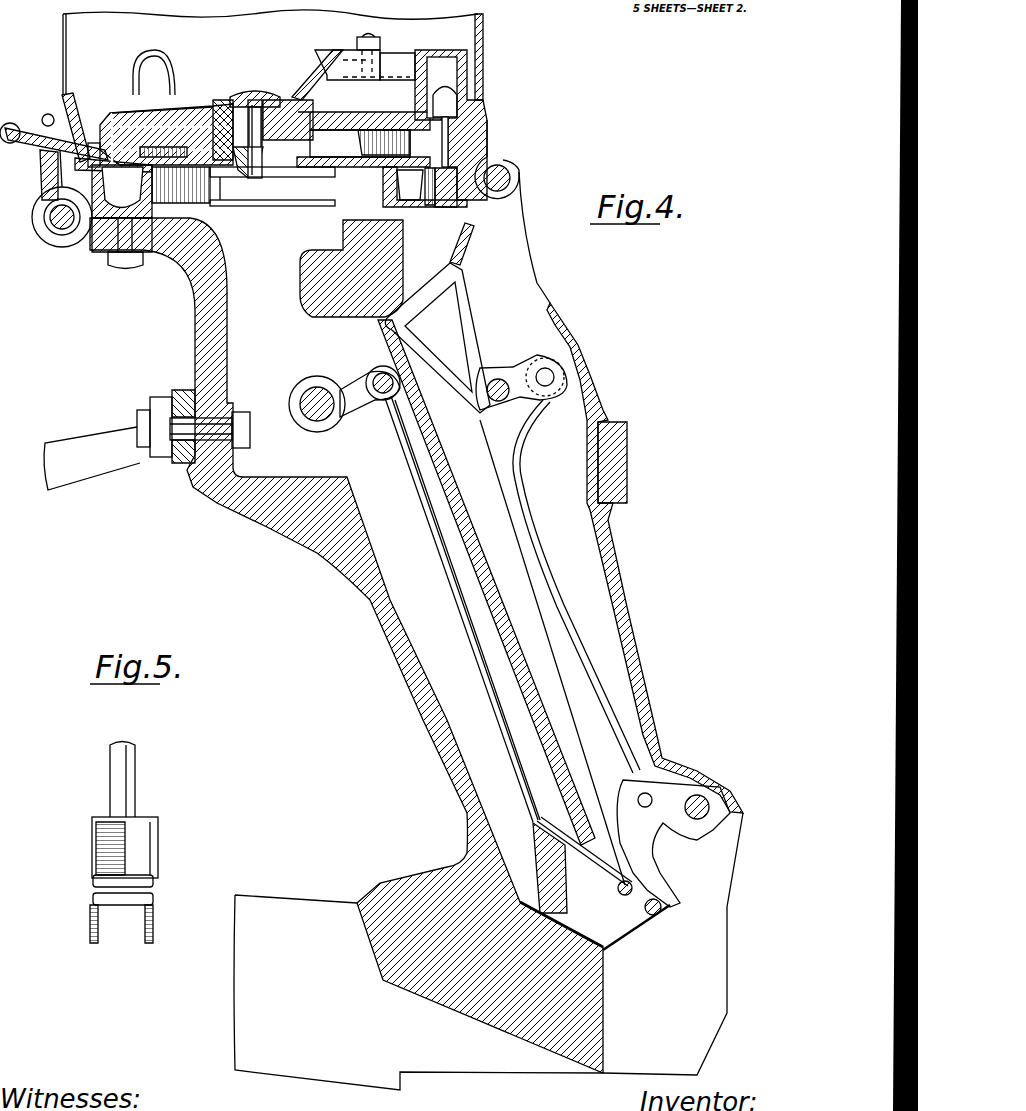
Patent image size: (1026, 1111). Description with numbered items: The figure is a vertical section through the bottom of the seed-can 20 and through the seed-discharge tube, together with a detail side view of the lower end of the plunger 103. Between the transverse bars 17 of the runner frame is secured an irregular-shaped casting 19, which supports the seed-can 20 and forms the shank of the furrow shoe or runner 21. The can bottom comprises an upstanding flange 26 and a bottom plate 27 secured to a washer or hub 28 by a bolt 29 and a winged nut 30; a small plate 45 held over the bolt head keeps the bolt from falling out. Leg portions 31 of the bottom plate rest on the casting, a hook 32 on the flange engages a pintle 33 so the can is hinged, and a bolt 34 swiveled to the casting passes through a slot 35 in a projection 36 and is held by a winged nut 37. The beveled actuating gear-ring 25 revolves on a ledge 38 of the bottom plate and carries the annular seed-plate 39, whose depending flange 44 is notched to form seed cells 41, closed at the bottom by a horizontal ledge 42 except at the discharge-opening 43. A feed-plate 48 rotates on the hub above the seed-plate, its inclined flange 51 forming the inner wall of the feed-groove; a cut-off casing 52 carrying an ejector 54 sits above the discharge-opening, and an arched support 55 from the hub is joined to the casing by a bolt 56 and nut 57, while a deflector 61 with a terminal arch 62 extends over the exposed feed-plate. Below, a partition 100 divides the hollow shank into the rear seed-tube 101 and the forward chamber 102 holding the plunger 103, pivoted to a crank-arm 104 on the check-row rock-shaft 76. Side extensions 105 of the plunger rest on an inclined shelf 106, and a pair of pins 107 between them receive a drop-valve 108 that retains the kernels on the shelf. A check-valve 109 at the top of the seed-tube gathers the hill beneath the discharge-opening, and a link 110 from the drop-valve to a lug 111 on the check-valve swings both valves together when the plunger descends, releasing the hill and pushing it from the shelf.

In FIG. 4, the transverse bars 17 is at (620, 455).
In FIG. 4, the casting 19 is at (315, 523).
In FIG. 4, the seed-can 20 is at (270, 52).
In FIG. 4, the furrow shoe or runner 21 is at (488, 951).
In FIG. 4, the beveled actuating gear-ring 25 is at (89, 236).
In FIG. 4, the upstanding flange 26 is at (487, 118).
In FIG. 4, the bottom plate 27 is at (208, 185).
In FIG. 4, the washer or hub 28 is at (220, 105).
In FIG. 4, the bolt 29 is at (284, 175).
In FIG. 4, the winged nut 30 is at (248, 178).
In FIG. 4, the leg portions 31 is at (157, 208).
In FIG. 4, the hook 32 is at (488, 148).
In FIG. 4, the pintle 33 is at (512, 172).
In FIG. 4, the bolt 34 is at (45, 178).
In FIG. 4, the slot 35 is at (35, 215).
In FIG. 4, the projection 36 is at (62, 110).
In FIG. 4, the winged nut 37 is at (8, 125).
In FIG. 4, the ledge or shoulder 38 is at (100, 175).
In FIG. 4, the annular seed-plate 39 is at (118, 112).
In FIG. 4, the seed cups or cells 41 is at (92, 143).
In FIG. 4, the horizontal ledge 42 is at (55, 230).
In FIG. 4, the discharge-opening 43 is at (450, 190).
In FIG. 4, the depending flange 44 is at (430, 190).
In FIG. 4, the small plate 45 is at (246, 96).
In FIG. 4, the feed-plate 48 is at (187, 108).
In FIG. 4, the inclined flange 51 is at (395, 136).
In FIG. 4, the cut-off casing 52 is at (485, 52).
In FIG. 4, the ejector 54 is at (449, 140).
In FIG. 4, the support 55 is at (330, 62).
In FIG. 4, the bolt 56 is at (400, 42).
In FIG. 4, the nut 57 is at (380, 42).
In FIG. 4, the deflector or baffle 61 is at (197, 110).
In FIG. 4, the terminal arch 62 is at (156, 65).
In FIG. 4, the check-row rock-shaft 76 is at (305, 415).
In FIG. 4, the partition 100 is at (518, 643).
In FIG. 4, the seed-tube 101 is at (573, 700).
In FIG. 4, the forward chamber 102 is at (467, 610).
In FIG. 4, the plunger 103 is at (473, 703).
In FIG. 5, the plunger 103 is at (138, 782).
In FIG. 4, the crank-arm 104 is at (350, 383).
In FIG. 4, the side extensions 105 is at (640, 925).
In FIG. 5, the side extensions 105 is at (92, 853).
In FIG. 4, the shelf 106 is at (604, 965).
In FIG. 4, the pins 107 is at (635, 886).
In FIG. 5, the pins 107 is at (95, 898).
In FIG. 4, the drop-valve 108 is at (640, 850).
In FIG. 4, the check-valve 109 is at (455, 322).
In FIG. 4, the link 110 is at (560, 575).
In FIG. 4, the lug 111 is at (560, 365).